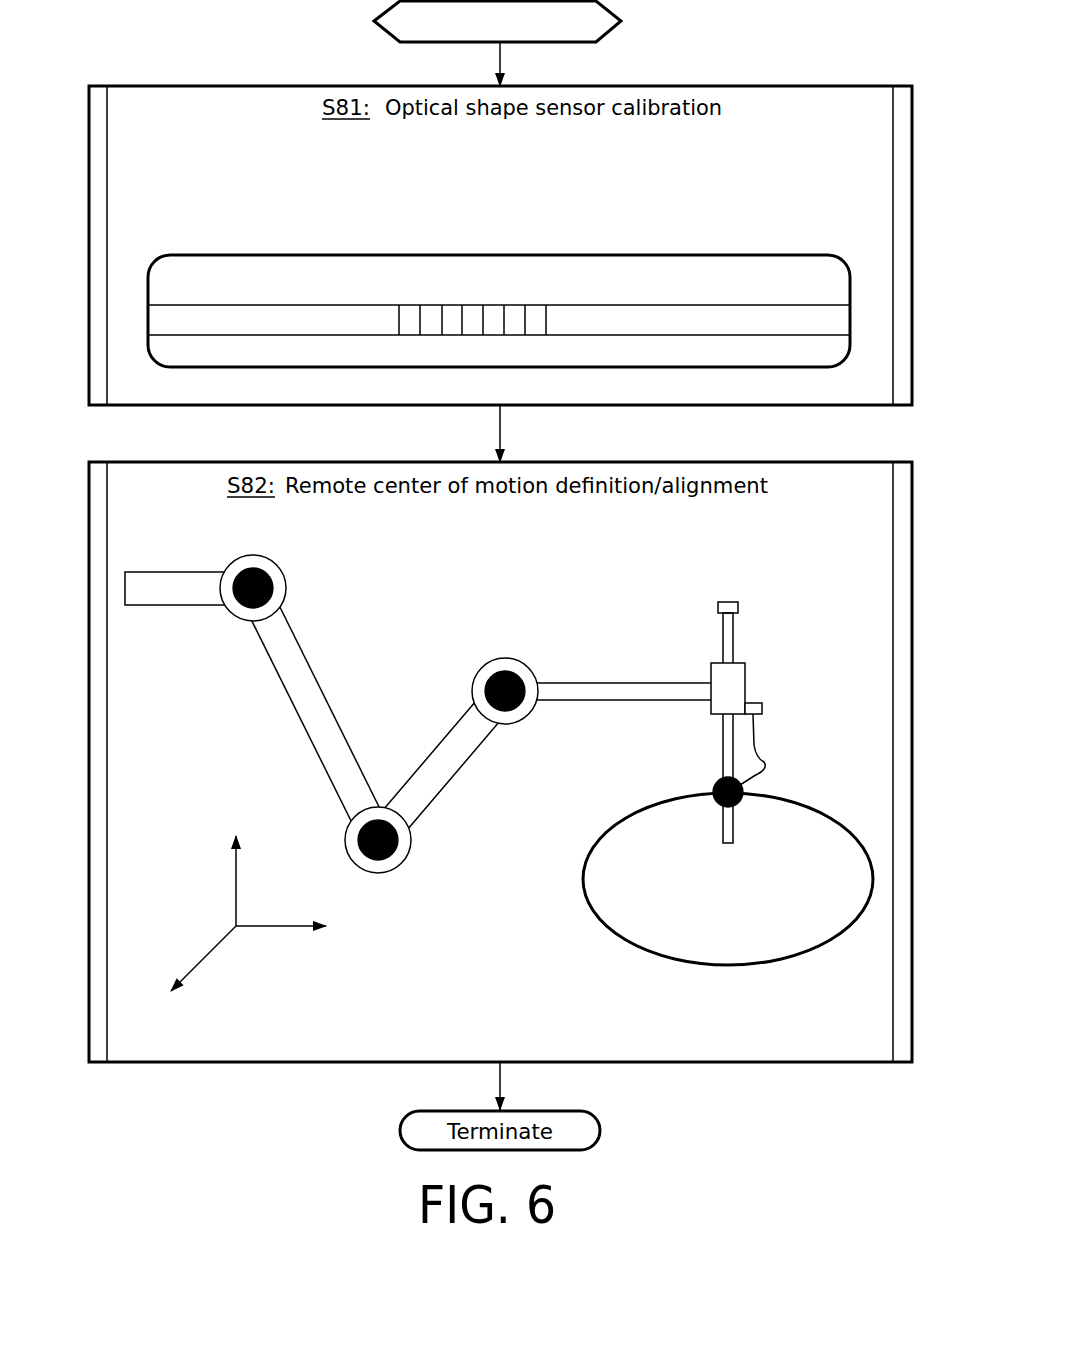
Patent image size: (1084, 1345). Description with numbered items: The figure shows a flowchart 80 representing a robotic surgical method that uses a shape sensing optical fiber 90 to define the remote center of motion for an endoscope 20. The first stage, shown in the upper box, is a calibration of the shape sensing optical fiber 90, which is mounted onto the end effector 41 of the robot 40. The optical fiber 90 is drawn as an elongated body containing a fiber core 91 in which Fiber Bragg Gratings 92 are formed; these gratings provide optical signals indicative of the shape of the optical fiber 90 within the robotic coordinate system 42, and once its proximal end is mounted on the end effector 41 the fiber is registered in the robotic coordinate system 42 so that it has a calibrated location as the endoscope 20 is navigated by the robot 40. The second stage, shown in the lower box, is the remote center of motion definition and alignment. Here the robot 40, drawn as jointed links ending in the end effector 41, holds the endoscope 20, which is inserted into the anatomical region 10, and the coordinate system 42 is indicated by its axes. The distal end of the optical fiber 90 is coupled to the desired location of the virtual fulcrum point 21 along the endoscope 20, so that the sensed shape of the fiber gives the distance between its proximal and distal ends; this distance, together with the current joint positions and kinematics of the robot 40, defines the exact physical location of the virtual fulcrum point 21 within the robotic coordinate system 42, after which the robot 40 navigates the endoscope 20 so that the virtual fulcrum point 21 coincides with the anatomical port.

The flowchart 80 is at (586, 33).
The shape sensing optical fiber 90 is at (780, 236).
The fiber core 91 is at (660, 305).
The Fiber Bragg Gratings 92 is at (410, 320).
The robot 40 is at (257, 684).
The end effector 41 is at (713, 670).
The robotic coordinate system 42 is at (207, 909).
The endoscope 20 is at (740, 650).
The virtual fulcrum point 21 is at (716, 790).
The anatomical region 10 is at (718, 929).